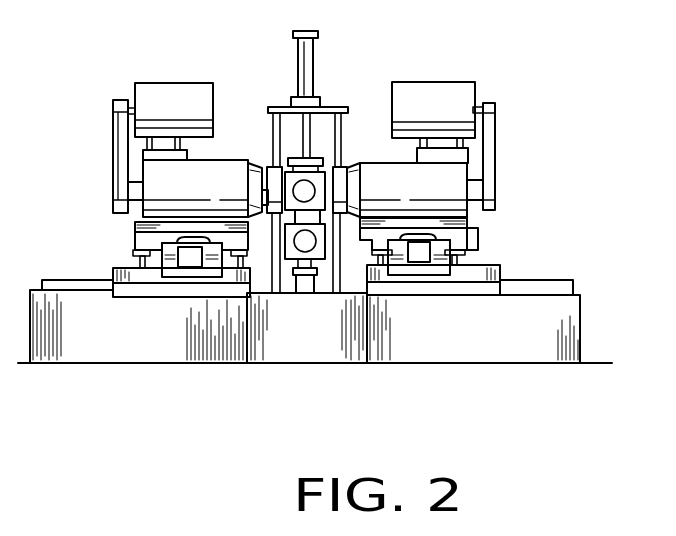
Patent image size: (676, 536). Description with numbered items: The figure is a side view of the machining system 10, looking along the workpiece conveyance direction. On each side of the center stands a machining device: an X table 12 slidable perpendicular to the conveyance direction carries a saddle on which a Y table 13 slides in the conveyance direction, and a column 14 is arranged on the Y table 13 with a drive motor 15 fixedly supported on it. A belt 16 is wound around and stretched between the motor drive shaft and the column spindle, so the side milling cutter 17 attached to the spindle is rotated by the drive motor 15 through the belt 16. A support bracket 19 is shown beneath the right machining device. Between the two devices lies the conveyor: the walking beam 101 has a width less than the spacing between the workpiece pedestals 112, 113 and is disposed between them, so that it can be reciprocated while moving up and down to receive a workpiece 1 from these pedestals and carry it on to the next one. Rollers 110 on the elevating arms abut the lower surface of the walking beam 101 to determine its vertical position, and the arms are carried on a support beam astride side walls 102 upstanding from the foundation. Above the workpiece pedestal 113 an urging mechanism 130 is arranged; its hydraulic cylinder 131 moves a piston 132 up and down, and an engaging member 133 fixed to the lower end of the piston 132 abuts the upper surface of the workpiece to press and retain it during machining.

The workpiece 1 is at (343, 165).
The machining system 10 is at (477, 63).
The X table 12 is at (500, 265).
The Y table 13 is at (277, 197).
The column 14 is at (450, 182).
The drive motor 15 is at (473, 88).
The belt 16 is at (490, 128).
The side milling cutter 17 is at (347, 175).
The support bracket 19 is at (460, 258).
The walking beam 101 is at (293, 282).
The side wall 102 is at (352, 350).
The roller 110 is at (305, 297).
The workpiece pedestal 112 is at (288, 268).
The workpiece pedestal 113 is at (330, 215).
The urging mechanism 130 is at (333, 63).
The hydraulic cylinder 131 is at (300, 64).
The piston 132 is at (312, 127).
The engaging member 133 is at (323, 167).